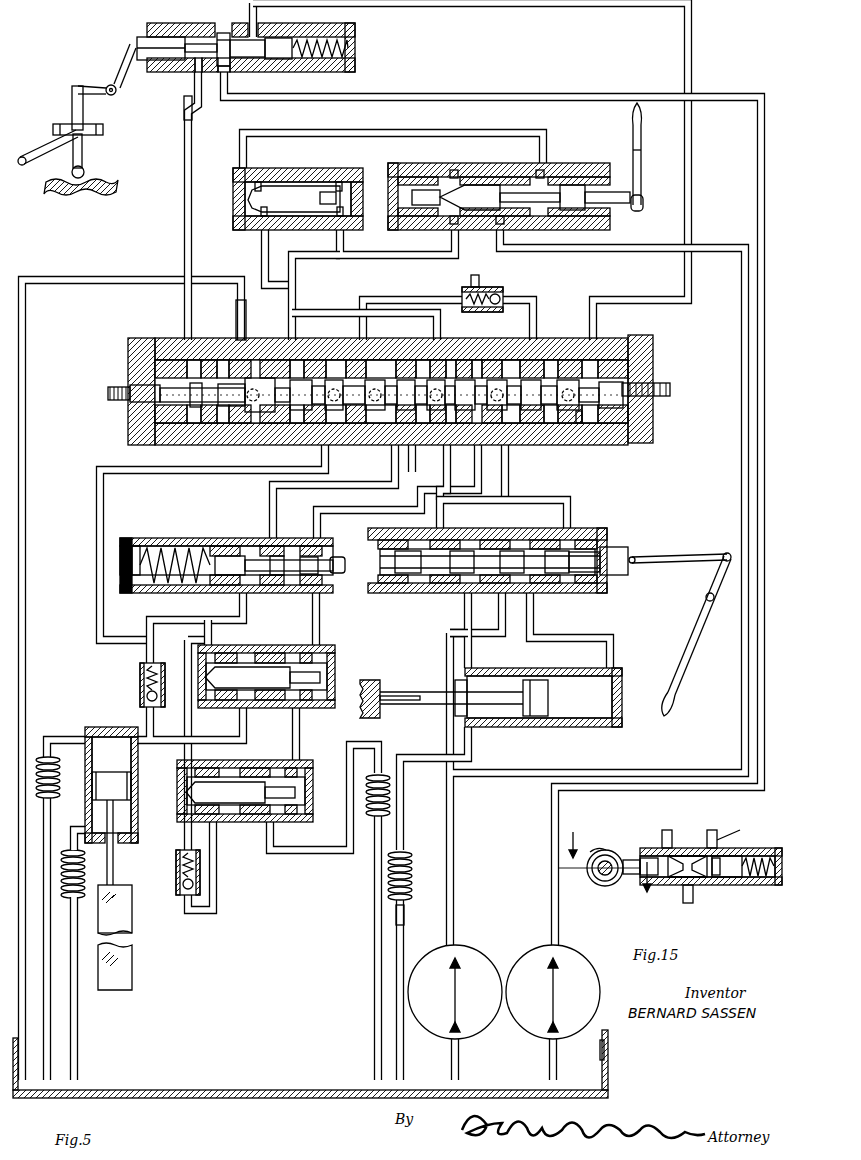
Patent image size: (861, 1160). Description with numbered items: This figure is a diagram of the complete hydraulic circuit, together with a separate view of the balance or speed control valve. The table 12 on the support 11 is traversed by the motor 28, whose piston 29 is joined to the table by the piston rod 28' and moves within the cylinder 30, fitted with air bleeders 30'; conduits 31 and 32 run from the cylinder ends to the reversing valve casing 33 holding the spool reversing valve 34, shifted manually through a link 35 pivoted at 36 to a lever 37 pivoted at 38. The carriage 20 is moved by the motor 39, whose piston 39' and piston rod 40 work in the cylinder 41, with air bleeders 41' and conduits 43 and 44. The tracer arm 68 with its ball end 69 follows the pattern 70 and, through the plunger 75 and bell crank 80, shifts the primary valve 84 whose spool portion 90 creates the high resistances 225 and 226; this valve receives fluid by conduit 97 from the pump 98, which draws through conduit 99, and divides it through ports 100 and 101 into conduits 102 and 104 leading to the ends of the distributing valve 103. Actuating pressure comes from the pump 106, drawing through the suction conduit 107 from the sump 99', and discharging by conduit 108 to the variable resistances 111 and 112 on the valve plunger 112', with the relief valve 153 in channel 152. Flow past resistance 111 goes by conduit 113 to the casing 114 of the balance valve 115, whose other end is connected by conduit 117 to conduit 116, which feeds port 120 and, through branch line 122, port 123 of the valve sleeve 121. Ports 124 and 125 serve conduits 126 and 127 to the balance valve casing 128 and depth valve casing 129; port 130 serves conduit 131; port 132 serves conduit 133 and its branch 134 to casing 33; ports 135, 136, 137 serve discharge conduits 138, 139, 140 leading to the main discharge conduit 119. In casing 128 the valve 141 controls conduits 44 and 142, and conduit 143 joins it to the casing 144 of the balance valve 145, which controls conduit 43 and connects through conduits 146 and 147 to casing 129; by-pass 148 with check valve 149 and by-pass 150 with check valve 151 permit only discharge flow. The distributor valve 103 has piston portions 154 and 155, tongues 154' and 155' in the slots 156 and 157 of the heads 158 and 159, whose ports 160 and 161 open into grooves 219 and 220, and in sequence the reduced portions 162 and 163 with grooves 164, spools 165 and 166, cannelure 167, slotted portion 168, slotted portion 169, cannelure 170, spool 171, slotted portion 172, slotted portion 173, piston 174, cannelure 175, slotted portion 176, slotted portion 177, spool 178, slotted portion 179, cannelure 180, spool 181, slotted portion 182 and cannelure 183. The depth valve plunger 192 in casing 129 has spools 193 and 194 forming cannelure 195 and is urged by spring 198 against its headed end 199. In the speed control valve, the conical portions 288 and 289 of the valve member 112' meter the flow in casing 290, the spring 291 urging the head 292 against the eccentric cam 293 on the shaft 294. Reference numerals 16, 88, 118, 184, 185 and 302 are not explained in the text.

In FIG. 5, the support 11 is at (604, 325).
In FIG. 5, the table 12 is at (480, 336).
In FIG. 15, the flow arrow 16 is at (612, 869).
In FIG. 5, the carriage 20 is at (134, 962).
In FIG. 5, the motor 28 is at (538, 706).
In FIG. 5, the piston rod 28' is at (400, 711).
In FIG. 5, the piston 29 is at (524, 716).
In FIG. 5, the cylinder 30 is at (446, 903).
In FIG. 5, the air bleeders 30' is at (378, 887).
In FIG. 5, the conduit 31 is at (606, 650).
In FIG. 5, the conduit 32 is at (464, 654).
In FIG. 5, the reversing valve casing 33 is at (610, 546).
In FIG. 5, the reversing valve 34 is at (622, 554).
In FIG. 5, the link 35 is at (660, 556).
In FIG. 5, the pivot 36 is at (726, 550).
In FIG. 5, the lever 37 is at (690, 630).
In FIG. 5, the pivot 38 is at (706, 596).
In FIG. 5, the motor 39 is at (130, 786).
In FIG. 5, the piston 39' is at (71, 935).
In FIG. 5, the piston rod 40 is at (116, 872).
In FIG. 5, the cylinder 41 is at (111, 774).
In FIG. 5, the air bleeders 41' is at (72, 910).
In FIG. 5, the conduit 43 is at (140, 742).
In FIG. 5, the conduit 44 is at (114, 856).
In FIG. 5, the tracer arm 68 is at (84, 148).
In FIG. 5, the ball end 69 is at (88, 172).
In FIG. 5, the pattern 70 is at (46, 180).
In FIG. 5, the plunger 75 is at (72, 108).
In FIG. 5, the bell crank 80 is at (116, 94).
In FIG. 5, the primary valve 84 is at (140, 38).
In FIG. 5, the cylinder 88 is at (343, 26).
In FIG. 5, the spool portion 90 is at (224, 31).
In FIG. 5, the conduit 97 is at (450, 95).
In FIG. 5, the pump 98 is at (540, 956).
In FIG. 5, the conduit 99 is at (528, 1059).
In FIG. 5, the sump 99' is at (585, 1048).
In FIG. 5, the port 100 is at (196, 78).
In FIG. 5, the port 101 is at (258, 30).
In FIG. 5, the conduit 102 is at (186, 222).
In FIG. 5, the distributing valve 103 is at (546, 428).
In FIG. 5, the conduit 104 is at (484, 4).
In FIG. 5, the pump 106 is at (470, 958).
In FIG. 5, the suction conduit 107 is at (460, 1050).
In FIG. 5, the conduit 108 is at (598, 255).
In FIG. 15, the conduit 108 is at (690, 900).
In FIG. 5, the variable fluid resistance 111 is at (500, 186).
In FIG. 15, the variable fluid resistance 111 is at (672, 854).
In FIG. 5, the variable fluid resistance 112 is at (486, 176).
In FIG. 15, the variable fluid resistance 112 is at (694, 830).
In FIG. 5, the valve plunger 112' is at (601, 157).
In FIG. 15, the valve plunger 112' is at (744, 850).
In FIG. 5, the conduit 113 is at (306, 132).
In FIG. 15, the conduit 113 is at (718, 846).
In FIG. 5, the casing 114 is at (322, 178).
In FIG. 5, the balance valve 115 is at (278, 190).
In FIG. 5, the conduit 116 is at (400, 252).
In FIG. 15, the conduit 116 is at (664, 836).
In FIG. 5, the conduit 117 is at (336, 240).
In FIG. 5, the conduit 118 is at (262, 246).
In FIG. 5, the main discharge conduit 119 is at (122, 280).
In FIG. 5, the port 120 is at (296, 362).
In FIG. 5, the valve sleeve 121 is at (228, 336).
In FIG. 5, the branch pressure line 122 is at (346, 312).
In FIG. 5, the port 123 is at (452, 362).
In FIG. 5, the port 124 is at (356, 446).
In FIG. 5, the port 125 is at (410, 482).
In FIG. 5, the conduit 126 is at (222, 472).
In FIG. 5, the conduit 127 is at (358, 486).
In FIG. 5, the balance valve casing 128 is at (290, 822).
In FIG. 5, the depth valve casing 129 is at (254, 536).
In FIG. 5, the port 130 is at (480, 455).
In FIG. 5, the conduit 131 is at (464, 488).
In FIG. 5, the port 132 is at (508, 452).
In FIG. 5, the conduit 133 is at (436, 520).
In FIG. 5, the branch conduit 134 is at (572, 504).
In FIG. 5, the port 135 is at (276, 428).
In FIG. 5, the port 136 is at (366, 364).
In FIG. 5, the port 137 is at (554, 362).
In FIG. 5, the branch discharge conduit 138 is at (243, 306).
In FIG. 5, the branch discharge conduit 139 is at (362, 332).
In FIG. 5, the branch discharge conduit 140 is at (530, 296).
In FIG. 5, the shiftable valve 141 is at (242, 805).
In FIG. 5, the conduit 142 is at (386, 640).
In FIG. 5, the conduit 143 is at (298, 726).
In FIG. 5, the balance valve casing 144 is at (262, 690).
In FIG. 5, the balance valve 145 is at (258, 708).
In FIG. 5, the conduit 146 is at (314, 632).
In FIG. 5, the conduit 147 is at (210, 632).
In FIG. 5, the by-pass conduit 148 is at (186, 618).
In FIG. 5, the check valve 149 is at (140, 680).
In FIG. 5, the by-pass conduit 150 is at (186, 832).
In FIG. 5, the check valve 151 is at (202, 869).
In FIG. 5, the conduit 152 is at (460, 292).
In FIG. 5, the emergency relief valve 153 is at (480, 286).
In FIG. 5, the piston portion 154 is at (209, 371).
In FIG. 5, the tongue portion 154' is at (207, 435).
In FIG. 5, the piston portion 155 is at (560, 426).
In FIG. 5, the tongue portion 155' is at (617, 439).
In FIG. 5, the elongated slot 156 is at (158, 440).
In FIG. 5, the elongated slot 157 is at (612, 428).
In FIG. 5, the head 158 is at (128, 354).
In FIG. 5, the head 159 is at (652, 344).
In FIG. 5, the port 160 is at (186, 362).
In FIG. 5, the port 161 is at (596, 362).
In FIG. 5, the reduced portion 162 is at (212, 362).
In FIG. 5, the reduced portion 163 is at (566, 448).
In FIG. 5, the grooves 164 is at (246, 428).
In FIG. 5, the cylindrical spool 165 is at (262, 366).
In FIG. 5, the cylindrical spool 166 is at (536, 362).
In FIG. 5, the cannelure 167 is at (306, 428).
In FIG. 5, the slotted portion 168 is at (498, 362).
In FIG. 5, the slotted portion 169 is at (322, 364).
In FIG. 5, the cannelure 170 is at (506, 364).
In FIG. 5, the spool 171 is at (338, 428).
In FIG. 5, the slotted portion 172 is at (478, 364).
In FIG. 5, the slotted portion 173 is at (370, 428).
In FIG. 5, the piston 174 is at (520, 428).
In FIG. 5, the cannelure 175 is at (380, 428).
In FIG. 5, the slotted portion 176 is at (472, 362).
In FIG. 5, the slotted portion 177 is at (396, 364).
In FIG. 5, the spool 178 is at (414, 446).
In FIG. 5, the slotted portion 179 is at (402, 428).
In FIG. 5, the cannelure 180 is at (438, 428).
In FIG. 5, the spool 181 is at (446, 448).
In FIG. 5, the slotted portion 182 is at (446, 326).
In FIG. 5, the cannelure 183 is at (458, 448).
In FIG. 5, the valve piston 184 is at (508, 556).
In FIG. 5, the conduit 185 is at (450, 612).
In FIG. 5, the valve plunger 192 is at (336, 550).
In FIG. 5, the spool portion 193 is at (276, 580).
In FIG. 5, the spool portion 194 is at (340, 578).
In FIG. 5, the cannelure 195 is at (298, 546).
In FIG. 5, the spring 198 is at (166, 538).
In FIG. 5, the enlarged headed end 199 is at (192, 548).
In FIG. 5, the groove 219 is at (182, 428).
In FIG. 5, the groove 220 is at (590, 430).
In FIG. 5, the flow restriction 225 is at (200, 96).
In FIG. 5, the flow restriction 226 is at (232, 74).
In FIG. 15, the inclined conical portion 288 is at (696, 878).
In FIG. 15, the inclined conical portion 289 is at (668, 880).
In FIG. 15, the valve casing 290 is at (734, 884).
In FIG. 15, the spring 291 is at (744, 874).
In FIG. 15, the head 292 is at (612, 852).
In FIG. 15, the eccentric cam 293 is at (606, 886).
In FIG. 15, the shaft 294 is at (598, 888).
In FIG. 15, the follower 302 is at (594, 852).